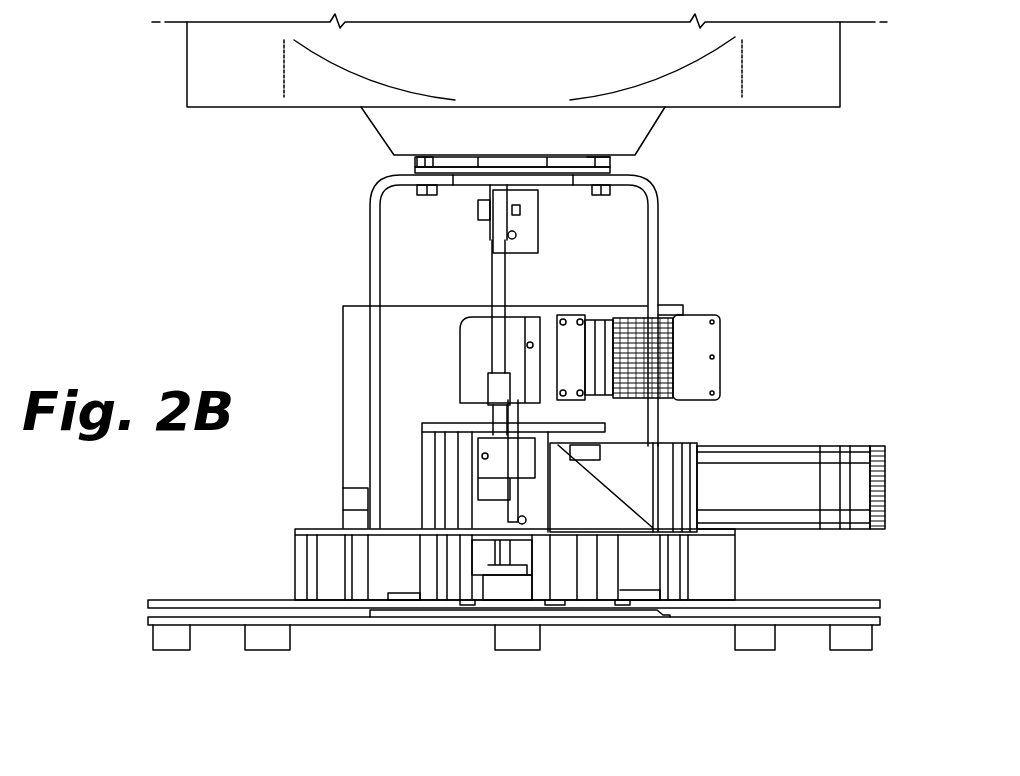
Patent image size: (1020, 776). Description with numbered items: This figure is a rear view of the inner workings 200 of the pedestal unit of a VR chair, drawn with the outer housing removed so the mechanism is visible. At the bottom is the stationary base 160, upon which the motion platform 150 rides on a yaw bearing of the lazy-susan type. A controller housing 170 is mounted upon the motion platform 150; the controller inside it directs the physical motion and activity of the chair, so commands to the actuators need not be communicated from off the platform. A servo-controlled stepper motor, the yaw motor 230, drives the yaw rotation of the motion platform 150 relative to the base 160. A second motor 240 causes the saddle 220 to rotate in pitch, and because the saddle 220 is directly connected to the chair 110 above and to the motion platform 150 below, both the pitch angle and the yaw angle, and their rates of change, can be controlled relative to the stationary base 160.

The inner workings 200 is at (150, 224).
The chair 110 is at (790, 82).
The saddle 220 is at (370, 222).
The controller housing 170 is at (343, 336).
The yaw motor 230 is at (662, 315).
The second motor 240 is at (828, 446).
The motion platform 150 is at (178, 600).
The base 160 is at (148, 624).